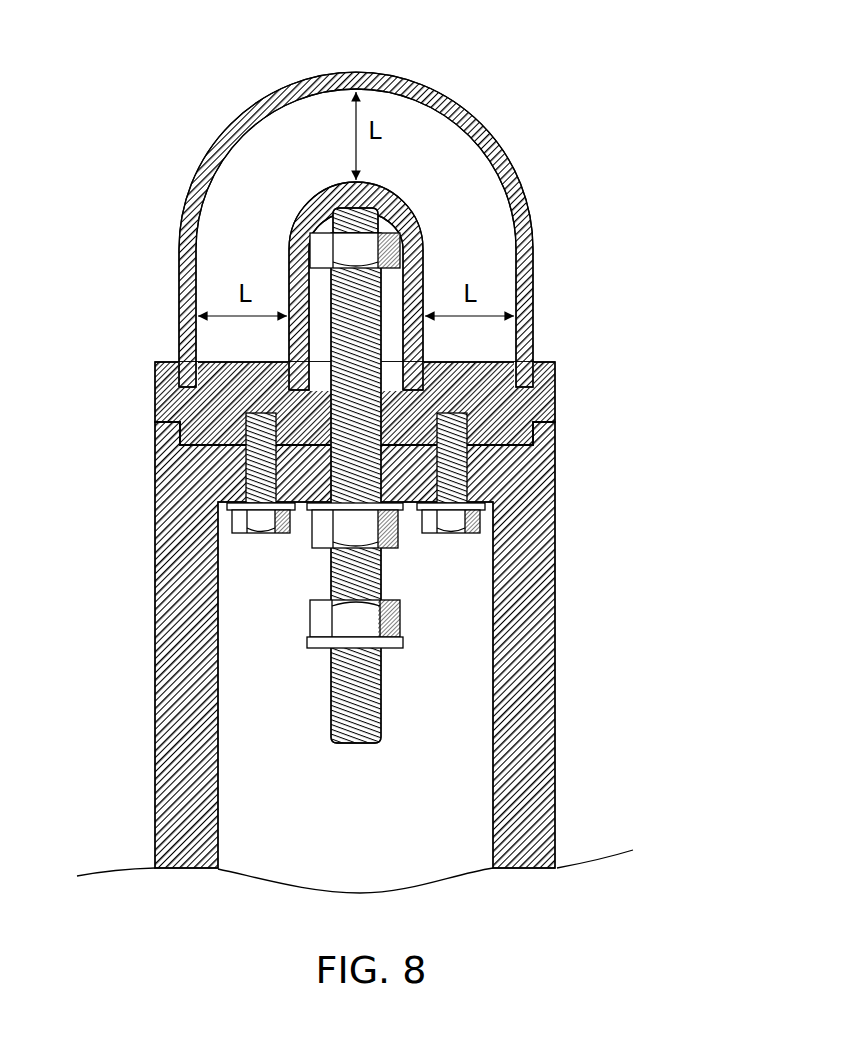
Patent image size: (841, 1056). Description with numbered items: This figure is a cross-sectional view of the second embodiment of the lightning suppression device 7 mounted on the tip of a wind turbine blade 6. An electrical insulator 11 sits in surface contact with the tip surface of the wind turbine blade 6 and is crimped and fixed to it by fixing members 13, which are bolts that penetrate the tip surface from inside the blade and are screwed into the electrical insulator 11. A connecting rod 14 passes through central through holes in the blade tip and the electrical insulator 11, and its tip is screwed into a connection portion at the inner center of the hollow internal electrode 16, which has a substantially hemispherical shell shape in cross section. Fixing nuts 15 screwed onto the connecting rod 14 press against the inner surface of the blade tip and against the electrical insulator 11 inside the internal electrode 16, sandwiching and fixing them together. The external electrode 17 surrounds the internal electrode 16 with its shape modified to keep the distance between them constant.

The wind turbine blade 6 is at (557, 787).
The lightning suppression device 7 is at (465, 93).
The electrical insulator 11 is at (556, 400).
The fixing members 13 is at (265, 534).
The connecting rod 14 is at (357, 745).
The fixing nuts 15 is at (388, 547).
The internal electrode 16 is at (320, 190).
The external electrode 17 is at (533, 228).